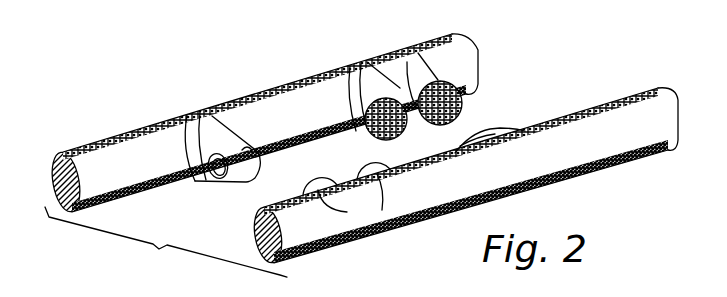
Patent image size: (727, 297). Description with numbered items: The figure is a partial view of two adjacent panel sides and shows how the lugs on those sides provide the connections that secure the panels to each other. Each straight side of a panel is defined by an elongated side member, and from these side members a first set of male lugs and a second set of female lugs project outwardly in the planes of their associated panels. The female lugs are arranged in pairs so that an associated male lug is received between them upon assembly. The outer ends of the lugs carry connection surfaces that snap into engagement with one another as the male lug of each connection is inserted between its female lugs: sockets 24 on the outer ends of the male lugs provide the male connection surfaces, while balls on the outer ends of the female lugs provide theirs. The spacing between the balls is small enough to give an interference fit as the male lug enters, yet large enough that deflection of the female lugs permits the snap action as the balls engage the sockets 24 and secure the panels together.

The socket 24 is at (245, 172).